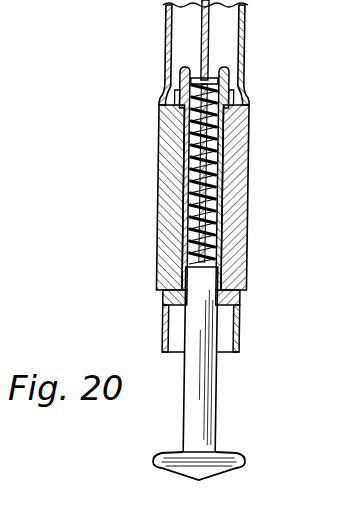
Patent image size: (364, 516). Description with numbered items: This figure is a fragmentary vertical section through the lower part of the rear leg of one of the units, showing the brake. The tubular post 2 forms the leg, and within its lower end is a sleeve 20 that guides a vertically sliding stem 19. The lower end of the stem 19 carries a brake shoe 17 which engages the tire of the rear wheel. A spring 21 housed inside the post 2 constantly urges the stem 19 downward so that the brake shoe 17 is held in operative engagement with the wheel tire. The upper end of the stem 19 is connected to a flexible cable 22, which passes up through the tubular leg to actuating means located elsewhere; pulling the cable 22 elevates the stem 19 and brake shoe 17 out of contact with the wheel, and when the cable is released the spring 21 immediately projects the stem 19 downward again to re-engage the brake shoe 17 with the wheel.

The post 2 is at (243, 63).
The brake shoe 17 is at (228, 463).
The stem 19 is at (265, 402).
The sleeve 20 is at (217, 240).
The spring 21 is at (221, 172).
The flexible cable 22 is at (212, 43).